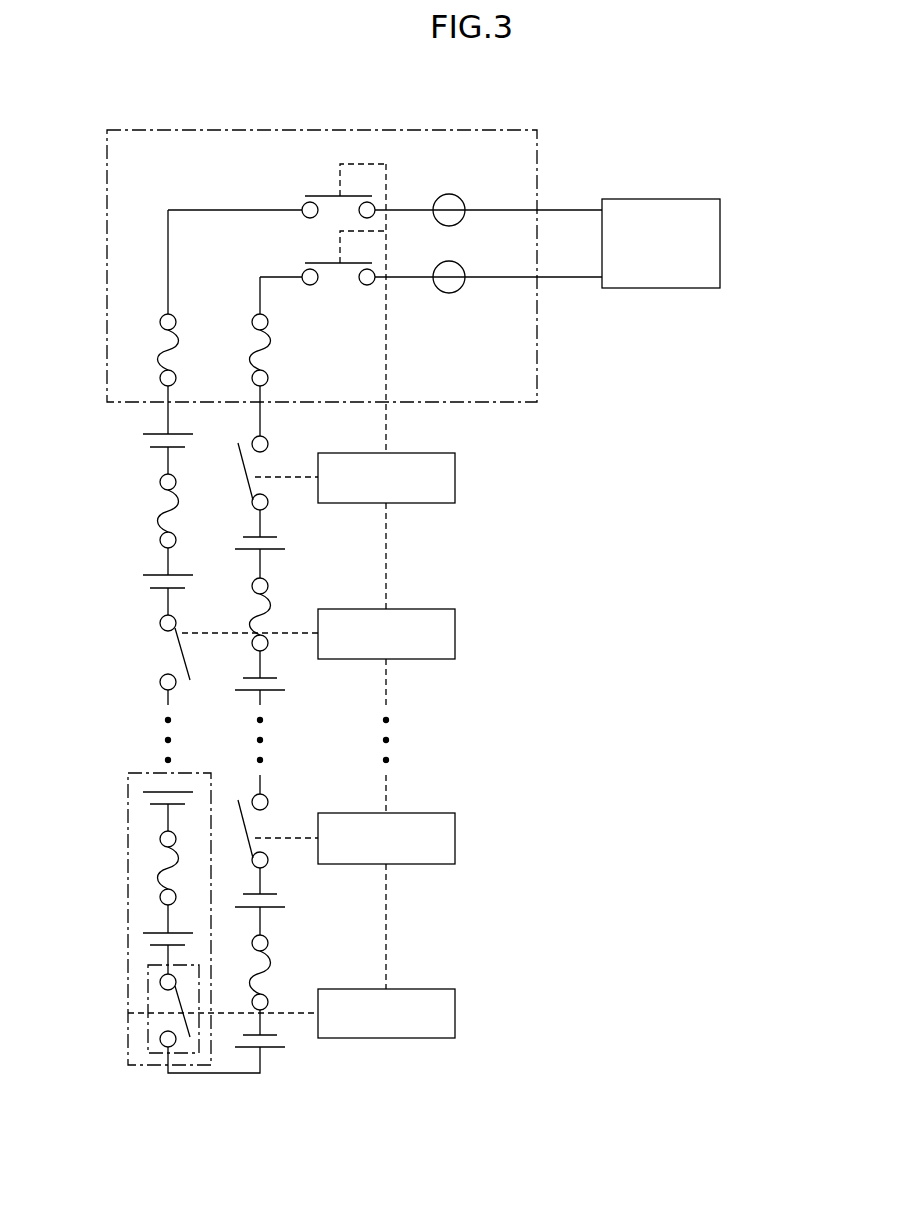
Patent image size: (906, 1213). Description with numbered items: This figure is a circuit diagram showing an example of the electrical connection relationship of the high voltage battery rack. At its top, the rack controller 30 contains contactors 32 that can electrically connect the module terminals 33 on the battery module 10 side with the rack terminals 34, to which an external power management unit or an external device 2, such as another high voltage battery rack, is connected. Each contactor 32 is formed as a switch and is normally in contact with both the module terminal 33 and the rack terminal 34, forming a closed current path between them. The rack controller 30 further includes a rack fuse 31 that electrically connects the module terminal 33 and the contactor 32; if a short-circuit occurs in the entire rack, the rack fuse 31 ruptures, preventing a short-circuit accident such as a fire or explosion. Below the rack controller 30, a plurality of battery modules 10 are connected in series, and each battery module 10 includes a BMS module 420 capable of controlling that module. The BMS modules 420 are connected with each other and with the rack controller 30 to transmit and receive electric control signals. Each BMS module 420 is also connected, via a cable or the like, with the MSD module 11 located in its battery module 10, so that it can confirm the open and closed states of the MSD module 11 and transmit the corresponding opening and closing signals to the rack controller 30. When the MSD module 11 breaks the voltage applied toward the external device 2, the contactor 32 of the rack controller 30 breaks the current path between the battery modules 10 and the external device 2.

The external device 2 is at (722, 240).
The battery module 10 is at (128, 815).
The MSD module 11 is at (146, 1013).
The rack controller 30 is at (538, 346).
The rack fuse 31 is at (254, 360).
The contactor 32 is at (315, 260).
The module terminal 33 is at (251, 377).
The rack terminal 34 is at (453, 262).
The BMS module 420 is at (456, 478).